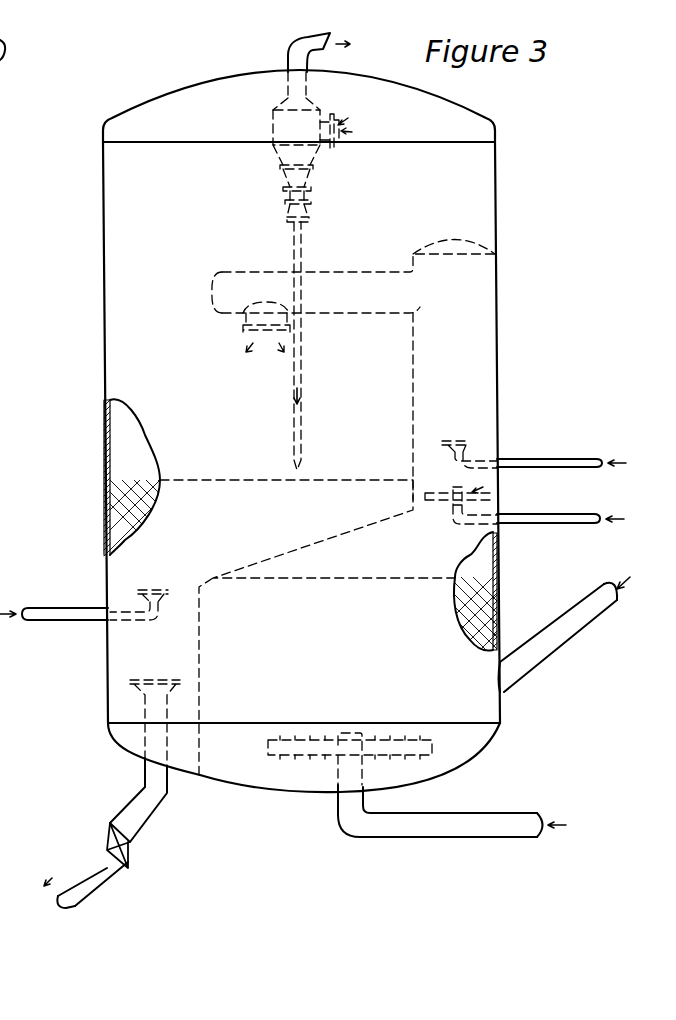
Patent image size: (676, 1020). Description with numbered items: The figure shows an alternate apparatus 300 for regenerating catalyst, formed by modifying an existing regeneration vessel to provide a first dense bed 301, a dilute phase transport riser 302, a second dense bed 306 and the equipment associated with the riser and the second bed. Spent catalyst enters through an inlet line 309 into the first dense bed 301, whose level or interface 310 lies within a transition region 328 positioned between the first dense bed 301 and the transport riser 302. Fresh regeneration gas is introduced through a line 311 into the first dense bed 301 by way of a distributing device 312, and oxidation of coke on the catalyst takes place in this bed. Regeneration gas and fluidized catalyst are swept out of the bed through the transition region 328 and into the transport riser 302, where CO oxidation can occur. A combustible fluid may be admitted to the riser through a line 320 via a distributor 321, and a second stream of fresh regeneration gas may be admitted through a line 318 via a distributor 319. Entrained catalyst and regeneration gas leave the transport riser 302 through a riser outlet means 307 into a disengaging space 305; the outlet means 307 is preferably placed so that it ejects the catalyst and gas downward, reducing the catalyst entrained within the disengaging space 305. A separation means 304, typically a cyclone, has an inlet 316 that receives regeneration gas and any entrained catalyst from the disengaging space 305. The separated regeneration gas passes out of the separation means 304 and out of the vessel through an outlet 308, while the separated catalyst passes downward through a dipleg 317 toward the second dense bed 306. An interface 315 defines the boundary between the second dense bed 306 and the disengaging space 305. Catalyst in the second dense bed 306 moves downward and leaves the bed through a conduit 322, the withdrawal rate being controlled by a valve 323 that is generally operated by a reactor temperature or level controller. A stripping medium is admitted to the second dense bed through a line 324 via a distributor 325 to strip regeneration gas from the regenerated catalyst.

The apparatus 300 is at (500, 180).
The first dense bed 301 is at (476, 611).
The dilute phase transport riser 302 is at (256, 272).
The separation means 304 is at (280, 112).
The disengaging space 305 is at (155, 207).
The second dense bed 306 is at (130, 519).
The riser outlet means 307 is at (247, 335).
The outlet 308 is at (290, 52).
The inlet line 309 is at (552, 658).
The level or interface 310 is at (475, 570).
The line 311 is at (448, 838).
The distributing device 312 is at (399, 752).
The interface 315 is at (137, 480).
The inlet 316 is at (335, 148).
The dipleg 317 is at (303, 395).
The line 318 is at (560, 514).
The distributor 319 is at (480, 491).
The line 320 is at (553, 459).
The distributor 321 is at (470, 440).
The conduit 322 is at (143, 776).
The valve 323 is at (98, 848).
The line 324 is at (66, 620).
The distributor 325 is at (140, 590).
The transition region 328 is at (388, 550).